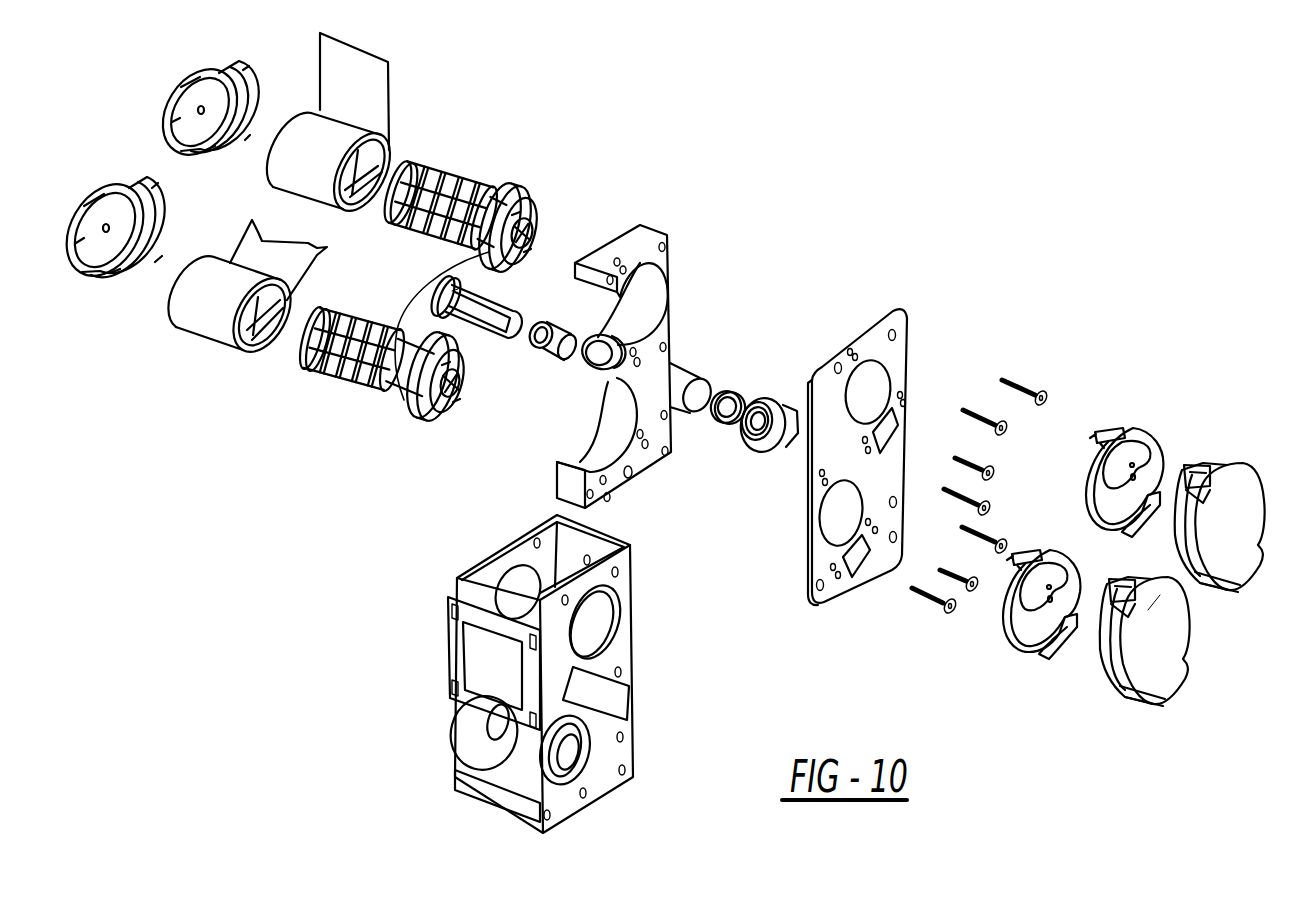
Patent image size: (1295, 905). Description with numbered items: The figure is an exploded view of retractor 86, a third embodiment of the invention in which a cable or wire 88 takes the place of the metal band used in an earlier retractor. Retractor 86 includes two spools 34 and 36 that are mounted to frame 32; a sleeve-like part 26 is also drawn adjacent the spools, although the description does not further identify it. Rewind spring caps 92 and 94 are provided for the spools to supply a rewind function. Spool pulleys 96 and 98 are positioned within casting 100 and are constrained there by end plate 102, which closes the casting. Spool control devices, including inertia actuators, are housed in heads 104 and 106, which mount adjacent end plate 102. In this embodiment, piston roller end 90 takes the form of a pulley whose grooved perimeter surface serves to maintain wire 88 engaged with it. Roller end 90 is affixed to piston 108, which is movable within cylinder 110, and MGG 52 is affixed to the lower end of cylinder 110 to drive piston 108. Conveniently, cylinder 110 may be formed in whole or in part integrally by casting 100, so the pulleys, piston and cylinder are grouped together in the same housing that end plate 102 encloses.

The sleeve 26 is at (353, 68).
The frame 32 is at (622, 650).
The spool 34 is at (340, 363).
The spool 36 is at (456, 172).
The MGG 52 is at (548, 360).
The retractor 86 is at (884, 188).
The cable or wire 88 is at (413, 277).
The piston roller end 90 is at (463, 318).
The rewind spring cap 92 is at (108, 182).
The rewind spring cap 94 is at (180, 97).
The spool pulley 96 is at (415, 407).
The spool pulley 98 is at (527, 193).
The casting 100 is at (670, 258).
The end plate 102 is at (900, 357).
The head 104 is at (1140, 657).
The head 106 is at (1237, 498).
The piston 108 is at (536, 285).
The cylinder 110 is at (688, 382).